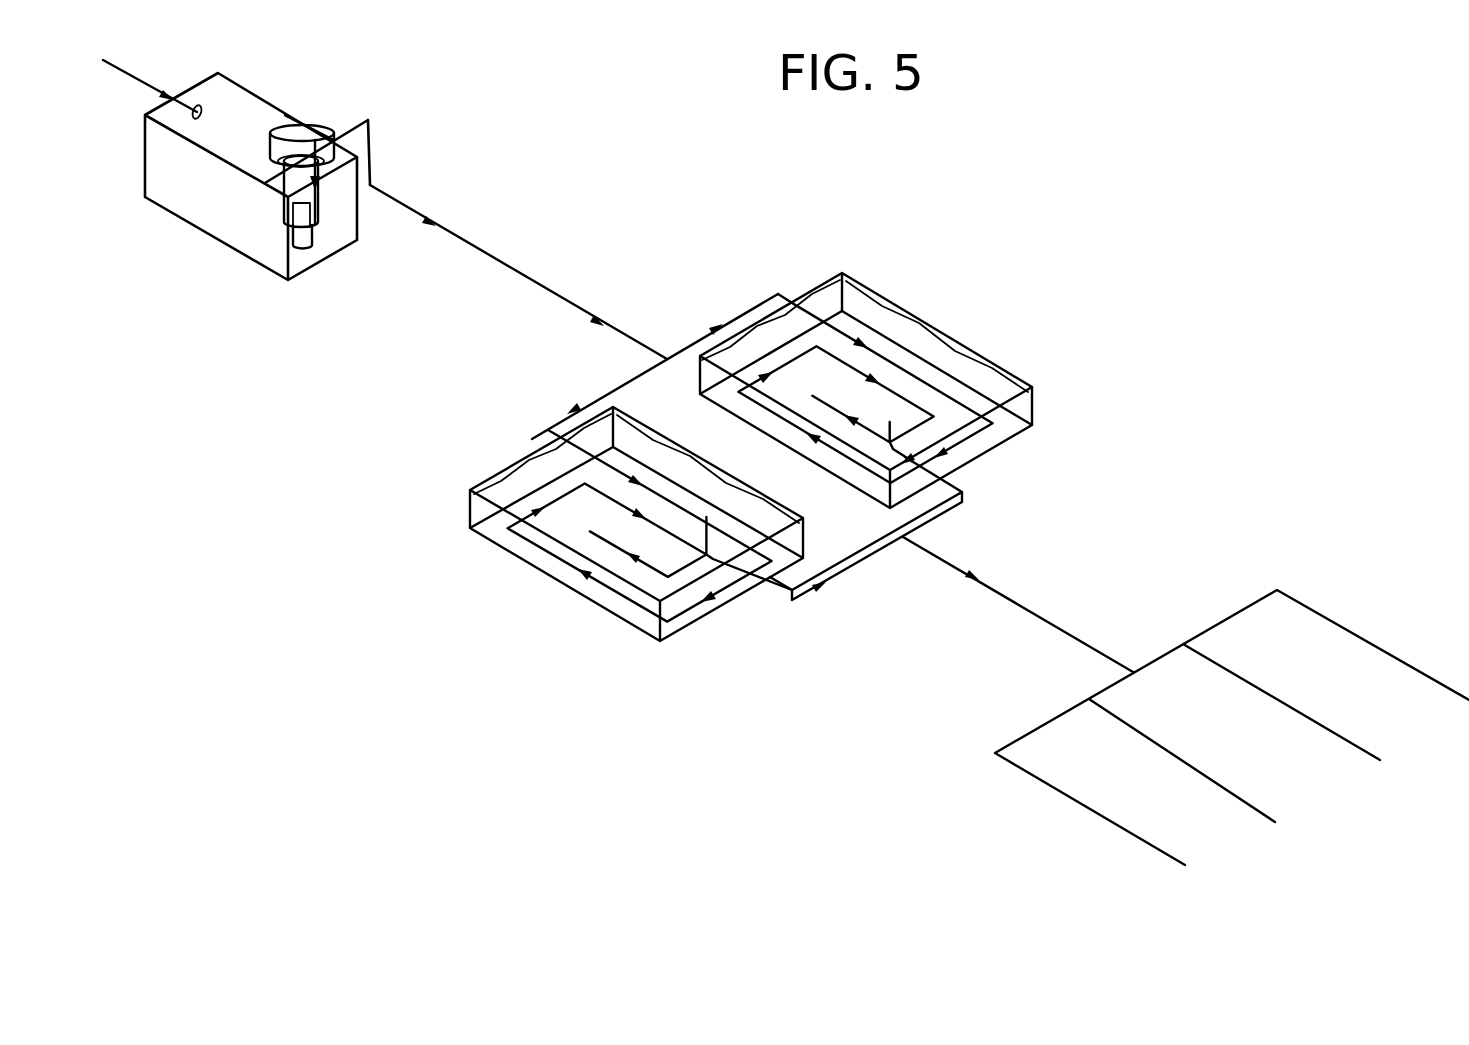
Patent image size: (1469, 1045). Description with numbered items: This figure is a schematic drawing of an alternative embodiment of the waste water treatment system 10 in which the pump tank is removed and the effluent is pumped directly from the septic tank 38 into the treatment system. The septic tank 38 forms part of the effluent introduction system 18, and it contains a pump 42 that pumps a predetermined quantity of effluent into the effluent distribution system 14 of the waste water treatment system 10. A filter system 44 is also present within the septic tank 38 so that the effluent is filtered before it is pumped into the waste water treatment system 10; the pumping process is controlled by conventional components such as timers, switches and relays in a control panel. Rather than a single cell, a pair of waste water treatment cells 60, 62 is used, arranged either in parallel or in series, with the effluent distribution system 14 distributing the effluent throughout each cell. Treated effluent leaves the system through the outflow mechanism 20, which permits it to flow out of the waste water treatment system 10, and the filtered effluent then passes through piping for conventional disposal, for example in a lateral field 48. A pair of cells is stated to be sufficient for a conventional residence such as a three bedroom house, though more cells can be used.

The waste water treatment system 10 is at (1050, 250).
The effluent distribution system 14 is at (945, 390).
The effluent introduction system 18 is at (565, 300).
The outflow mechanism 20 is at (940, 520).
The septic tank 38 is at (225, 220).
The pump 42 is at (302, 213).
The filter system 44 is at (335, 146).
The lateral field 48 is at (1340, 590).
The waste water treatment cell 60 is at (483, 507).
The waste water treatment cell 62 is at (1018, 408).